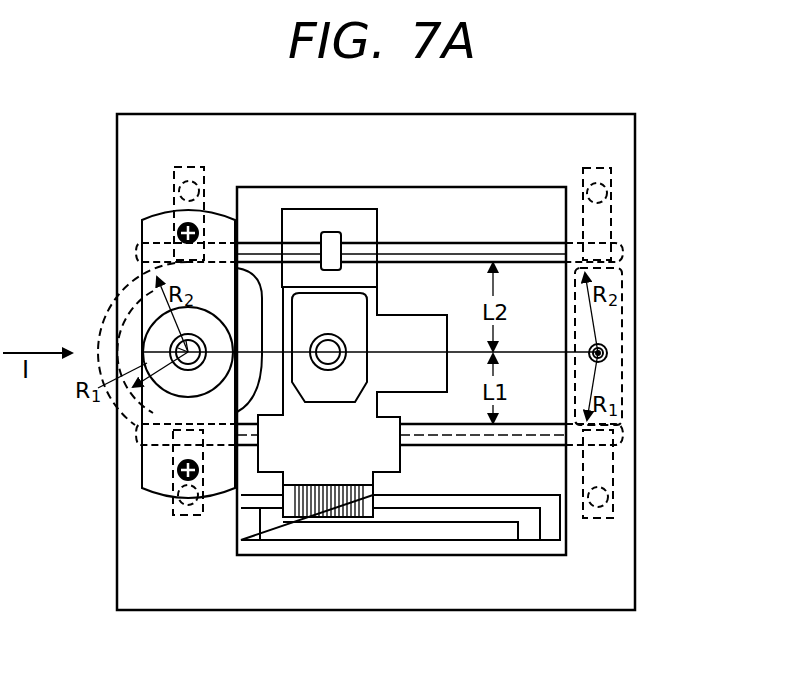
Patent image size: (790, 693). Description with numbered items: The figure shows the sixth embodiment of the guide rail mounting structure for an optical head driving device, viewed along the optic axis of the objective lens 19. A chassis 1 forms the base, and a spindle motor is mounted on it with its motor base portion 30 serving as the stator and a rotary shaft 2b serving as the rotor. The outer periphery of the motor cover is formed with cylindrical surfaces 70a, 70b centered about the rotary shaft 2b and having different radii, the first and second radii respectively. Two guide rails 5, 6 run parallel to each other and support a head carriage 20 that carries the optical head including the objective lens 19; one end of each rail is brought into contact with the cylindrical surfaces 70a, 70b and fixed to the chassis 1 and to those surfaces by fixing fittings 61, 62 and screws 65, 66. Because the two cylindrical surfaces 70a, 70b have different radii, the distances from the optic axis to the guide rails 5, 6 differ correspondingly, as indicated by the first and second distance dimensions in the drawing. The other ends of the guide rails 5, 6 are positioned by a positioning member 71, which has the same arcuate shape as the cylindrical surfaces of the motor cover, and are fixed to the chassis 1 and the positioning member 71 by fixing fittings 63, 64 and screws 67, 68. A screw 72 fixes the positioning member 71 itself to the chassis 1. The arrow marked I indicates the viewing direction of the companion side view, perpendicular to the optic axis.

The chassis 1 is at (290, 612).
The rotary shaft 2b is at (176, 352).
The guide rail 5 is at (449, 447).
The guide rail 6 is at (431, 248).
The objective lens 19 is at (342, 352).
The head carriage 20 is at (328, 447).
The motor base portion 30 is at (153, 473).
The fixing fitting 61 is at (173, 512).
The fixing fitting 62 is at (185, 167).
The fixing fitting 63 is at (597, 520).
The fixing fitting 64 is at (590, 168).
The screw 65 is at (190, 505).
The screw 66 is at (199, 190).
The screw 67 is at (608, 500).
The screw 68 is at (607, 190).
The cylindrical surface 70a is at (140, 402).
The cylindrical surface 70b is at (130, 270).
The positioning member 71 is at (624, 376).
The screw 72 is at (606, 350).